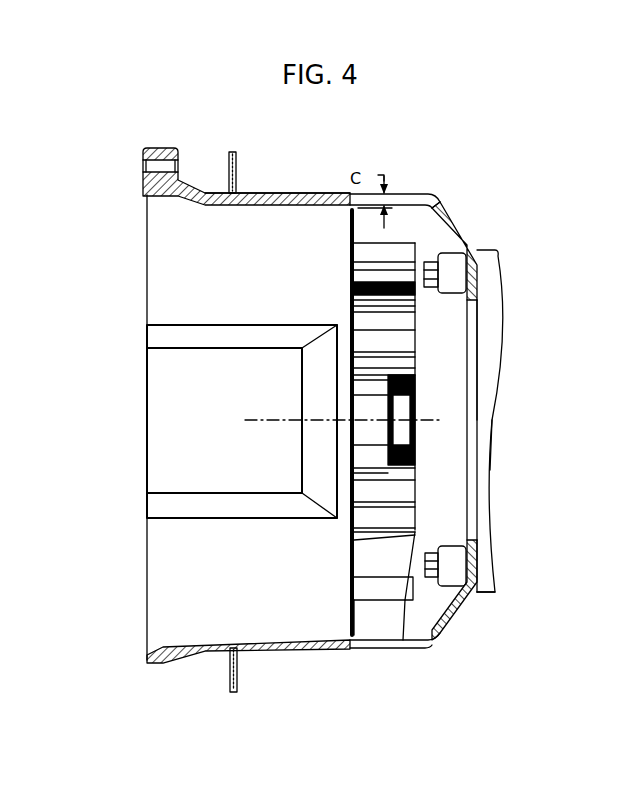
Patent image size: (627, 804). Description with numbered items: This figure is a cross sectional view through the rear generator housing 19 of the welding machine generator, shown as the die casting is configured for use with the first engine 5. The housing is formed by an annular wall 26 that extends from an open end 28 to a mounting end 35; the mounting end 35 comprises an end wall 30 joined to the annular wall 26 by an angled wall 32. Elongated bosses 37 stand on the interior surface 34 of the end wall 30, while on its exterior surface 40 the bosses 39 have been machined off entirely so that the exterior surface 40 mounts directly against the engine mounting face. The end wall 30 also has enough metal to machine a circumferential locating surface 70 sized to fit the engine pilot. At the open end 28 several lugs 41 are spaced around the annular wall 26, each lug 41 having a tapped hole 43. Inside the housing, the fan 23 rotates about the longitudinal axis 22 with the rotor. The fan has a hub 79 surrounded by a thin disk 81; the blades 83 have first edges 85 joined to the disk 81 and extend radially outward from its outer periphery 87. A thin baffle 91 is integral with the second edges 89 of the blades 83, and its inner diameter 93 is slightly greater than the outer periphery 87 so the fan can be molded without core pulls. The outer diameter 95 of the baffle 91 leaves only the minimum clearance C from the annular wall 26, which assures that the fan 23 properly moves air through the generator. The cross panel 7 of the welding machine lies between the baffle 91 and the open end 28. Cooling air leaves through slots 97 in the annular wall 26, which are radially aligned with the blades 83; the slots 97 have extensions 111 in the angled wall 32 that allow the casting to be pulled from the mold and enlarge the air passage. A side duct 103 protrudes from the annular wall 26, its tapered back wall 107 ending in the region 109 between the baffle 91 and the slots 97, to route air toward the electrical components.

The first engine 5 is at (492, 453).
The cross panel 7 is at (238, 668).
The rear generator housing 19 is at (155, 665).
The longitudinal axis 22 is at (244, 458).
The fan 23 is at (402, 612).
The annular wall 26 is at (280, 194).
The open end 28 is at (147, 625).
The end wall 30 is at (478, 545).
The angled wall 32 is at (456, 238).
The interior surface 34 is at (466, 430).
The mounting end 35 is at (488, 372).
The elongated bosses 37 is at (455, 553).
The bosses 39 is at (480, 595).
The exterior surface 40 is at (478, 410).
The lugs 41 is at (163, 150).
The tapped hole 43 is at (193, 172).
The circumferential locating surface 70 is at (463, 553).
The hub 79 is at (382, 455).
The disk 81 is at (410, 541).
The blades 83 is at (386, 340).
The first edges 85 is at (400, 489).
The outer periphery 87 is at (400, 275).
The second edges 89 is at (378, 588).
The baffle 91 is at (362, 600).
The inner diameter 93 is at (350, 262).
The outer diameter 95 is at (383, 602).
The slots 97 is at (412, 193).
The side ducts 103 is at (170, 385).
The tapered back walls 107 is at (315, 363).
The region 109 is at (277, 436).
The extensions 111 is at (440, 206).